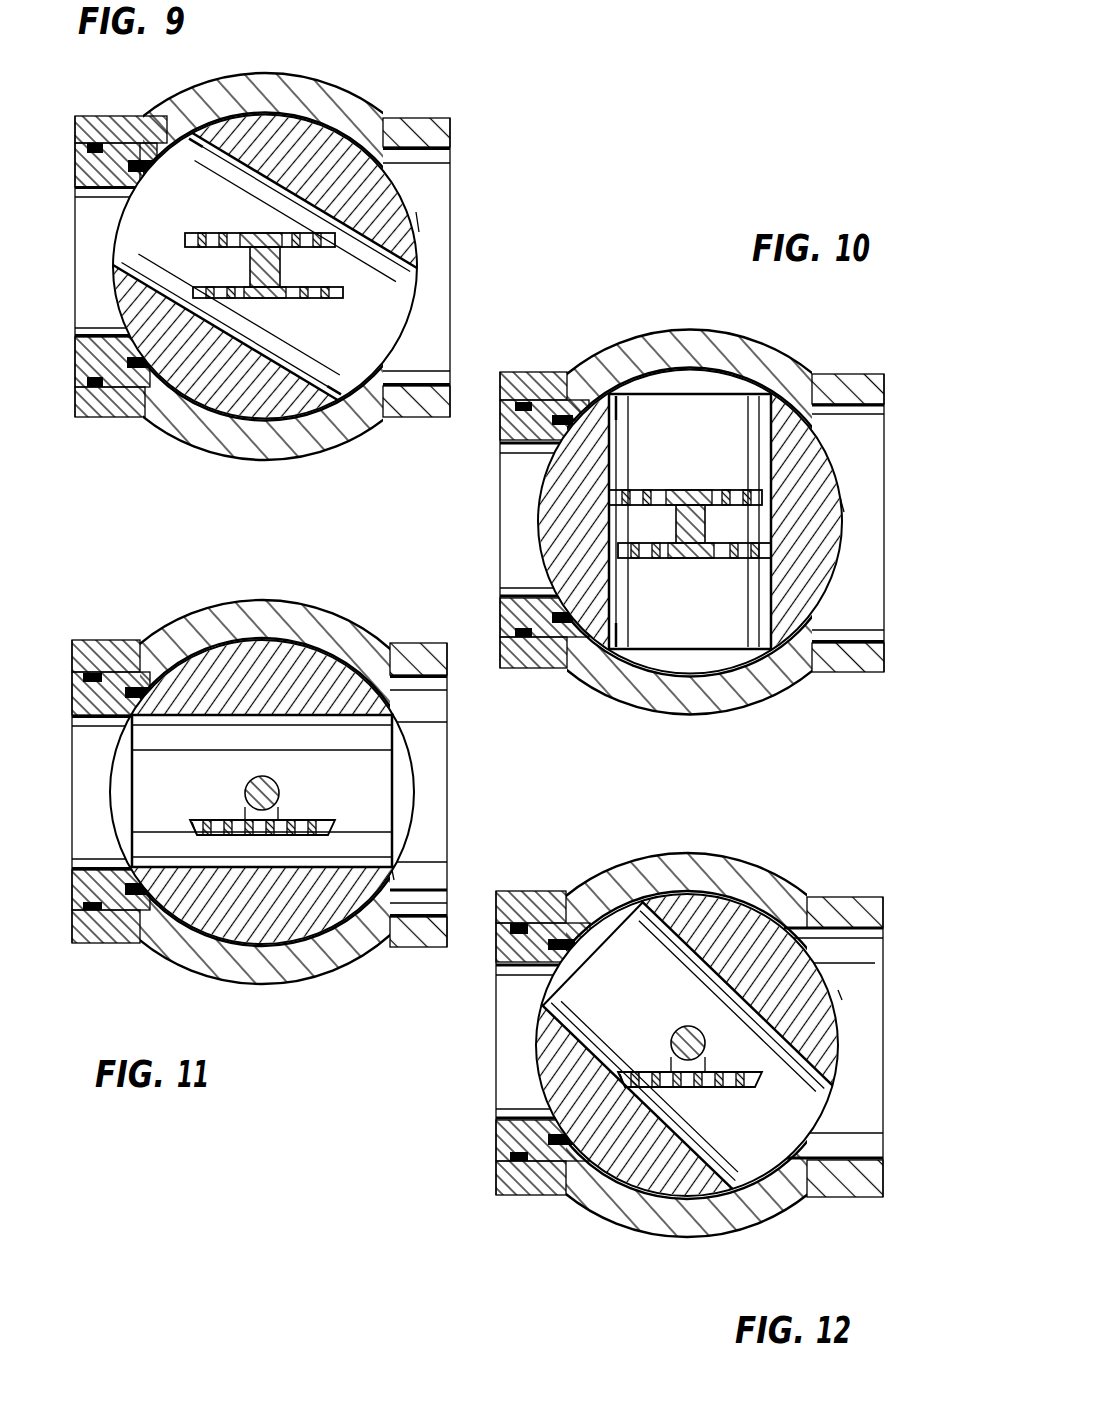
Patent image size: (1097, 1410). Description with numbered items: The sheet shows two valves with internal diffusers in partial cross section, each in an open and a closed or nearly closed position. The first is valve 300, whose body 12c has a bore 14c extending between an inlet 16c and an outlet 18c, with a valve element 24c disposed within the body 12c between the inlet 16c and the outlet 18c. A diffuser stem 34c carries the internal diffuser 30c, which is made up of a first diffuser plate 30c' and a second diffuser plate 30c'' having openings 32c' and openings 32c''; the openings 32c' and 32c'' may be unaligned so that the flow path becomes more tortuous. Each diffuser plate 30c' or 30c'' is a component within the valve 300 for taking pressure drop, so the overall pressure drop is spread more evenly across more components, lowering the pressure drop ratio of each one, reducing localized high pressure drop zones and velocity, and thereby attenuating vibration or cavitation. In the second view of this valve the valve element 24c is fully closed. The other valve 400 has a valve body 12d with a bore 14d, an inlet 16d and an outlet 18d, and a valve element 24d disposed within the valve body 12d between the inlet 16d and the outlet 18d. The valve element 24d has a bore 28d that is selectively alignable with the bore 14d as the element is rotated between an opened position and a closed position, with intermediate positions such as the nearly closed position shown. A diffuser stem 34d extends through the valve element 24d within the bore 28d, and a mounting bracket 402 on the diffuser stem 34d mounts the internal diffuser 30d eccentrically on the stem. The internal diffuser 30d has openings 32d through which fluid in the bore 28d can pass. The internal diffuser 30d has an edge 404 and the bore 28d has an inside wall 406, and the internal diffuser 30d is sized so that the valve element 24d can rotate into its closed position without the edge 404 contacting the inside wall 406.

In FIG. 9, the body 12c is at (314, 78).
In FIG. 10, the body 12c is at (770, 340).
In FIG. 9, the bore 14c is at (93, 307).
In FIG. 9, the inlet 16c is at (90, 234).
In FIG. 10, the inlet 16c is at (500, 513).
In FIG. 9, the outlet 18c is at (451, 257).
In FIG. 10, the outlet 18c is at (882, 610).
In FIG. 9, the valve element 24c is at (417, 221).
In FIG. 10, the valve element 24c is at (840, 503).
In FIG. 9, the internal diffuser 30c is at (266, 267).
In FIG. 10, the internal diffuser 30c is at (687, 521).
In FIG. 9, the first diffuser plate 30c' is at (383, 343).
In FIG. 10, the first diffuser plate 30c' is at (580, 678).
In FIG. 9, the second diffuser plate 30c'' is at (170, 195).
In FIG. 10, the second diffuser plate 30c'' is at (575, 398).
In FIG. 9, the openings 32c' is at (263, 272).
In FIG. 10, the openings 32c' is at (694, 577).
In FIG. 9, the openings 32c'' is at (244, 221).
In FIG. 10, the openings 32c'' is at (685, 452).
In FIG. 9, the diffuser stem 34c is at (280, 268).
In FIG. 10, the diffuser stem 34c is at (711, 520).
In FIG. 9, the valve 300 is at (474, 98).
In FIG. 10, the valve 300 is at (625, 314).
In FIG. 11, the valve body 12d is at (120, 641).
In FIG. 12, the valve body 12d is at (737, 854).
In FIG. 11, the bore 14d is at (87, 830).
In FIG. 12, the bore 14d is at (507, 1080).
In FIG. 11, the inlet 16d is at (74, 735).
In FIG. 12, the inlet 16d is at (494, 1046).
In FIG. 11, the outlet 18d is at (447, 795).
In FIG. 12, the outlet 18d is at (887, 1136).
In FIG. 11, the valve element 24d is at (390, 878).
In FIG. 12, the valve element 24d is at (841, 995).
In FIG. 11, the bore 28d is at (187, 785).
In FIG. 12, the bore 28d is at (657, 979).
In FIG. 11, the internal diffuser 30d is at (327, 821).
In FIG. 12, the internal diffuser 30d is at (762, 1084).
In FIG. 11, the openings 32d is at (212, 838).
In FIG. 12, the openings 32d is at (721, 1087).
In FIG. 11, the diffuser stem 34d is at (274, 778).
In FIG. 12, the diffuser stem 34d is at (685, 1026).
In FIG. 11, the valve 400 is at (325, 998).
In FIG. 12, the valve 400 is at (532, 1233).
In FIG. 11, the mounting bracket 402 is at (244, 812).
In FIG. 12, the mounting bracket 402 is at (704, 1071).
In FIG. 11, the edge 404 is at (192, 825).
In FIG. 12, the edge 404 is at (635, 1070).
In FIG. 11, the inside wall 406 is at (157, 876).
In FIG. 12, the inside wall 406 is at (548, 1007).